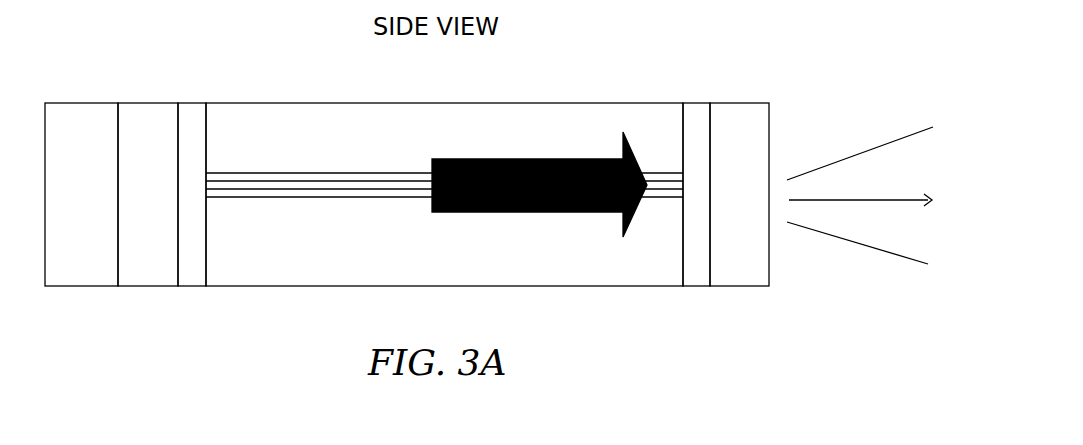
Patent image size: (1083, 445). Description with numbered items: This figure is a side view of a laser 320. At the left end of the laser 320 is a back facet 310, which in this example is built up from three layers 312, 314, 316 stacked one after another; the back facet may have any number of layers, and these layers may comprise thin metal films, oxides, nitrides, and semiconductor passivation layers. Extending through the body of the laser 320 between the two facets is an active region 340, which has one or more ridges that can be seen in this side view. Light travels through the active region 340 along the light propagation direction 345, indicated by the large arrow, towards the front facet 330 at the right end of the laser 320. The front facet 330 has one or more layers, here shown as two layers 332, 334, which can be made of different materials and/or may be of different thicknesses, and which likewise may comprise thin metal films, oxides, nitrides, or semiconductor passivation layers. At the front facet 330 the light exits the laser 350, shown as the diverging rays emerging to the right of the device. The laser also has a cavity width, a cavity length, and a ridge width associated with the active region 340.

The back facet 310 is at (112, 190).
The back facet layer 312 is at (77, 290).
The back facet layer 314 is at (150, 290).
The back facet layer 316 is at (195, 290).
The laser 320 is at (440, 102).
The front facet 330 is at (705, 182).
The front facet layer 332 is at (700, 290).
The front facet layer 334 is at (748, 290).
The active region 340 is at (372, 160).
The light propagation direction 345 is at (545, 158).
The light exiting the laser 350 is at (868, 102).